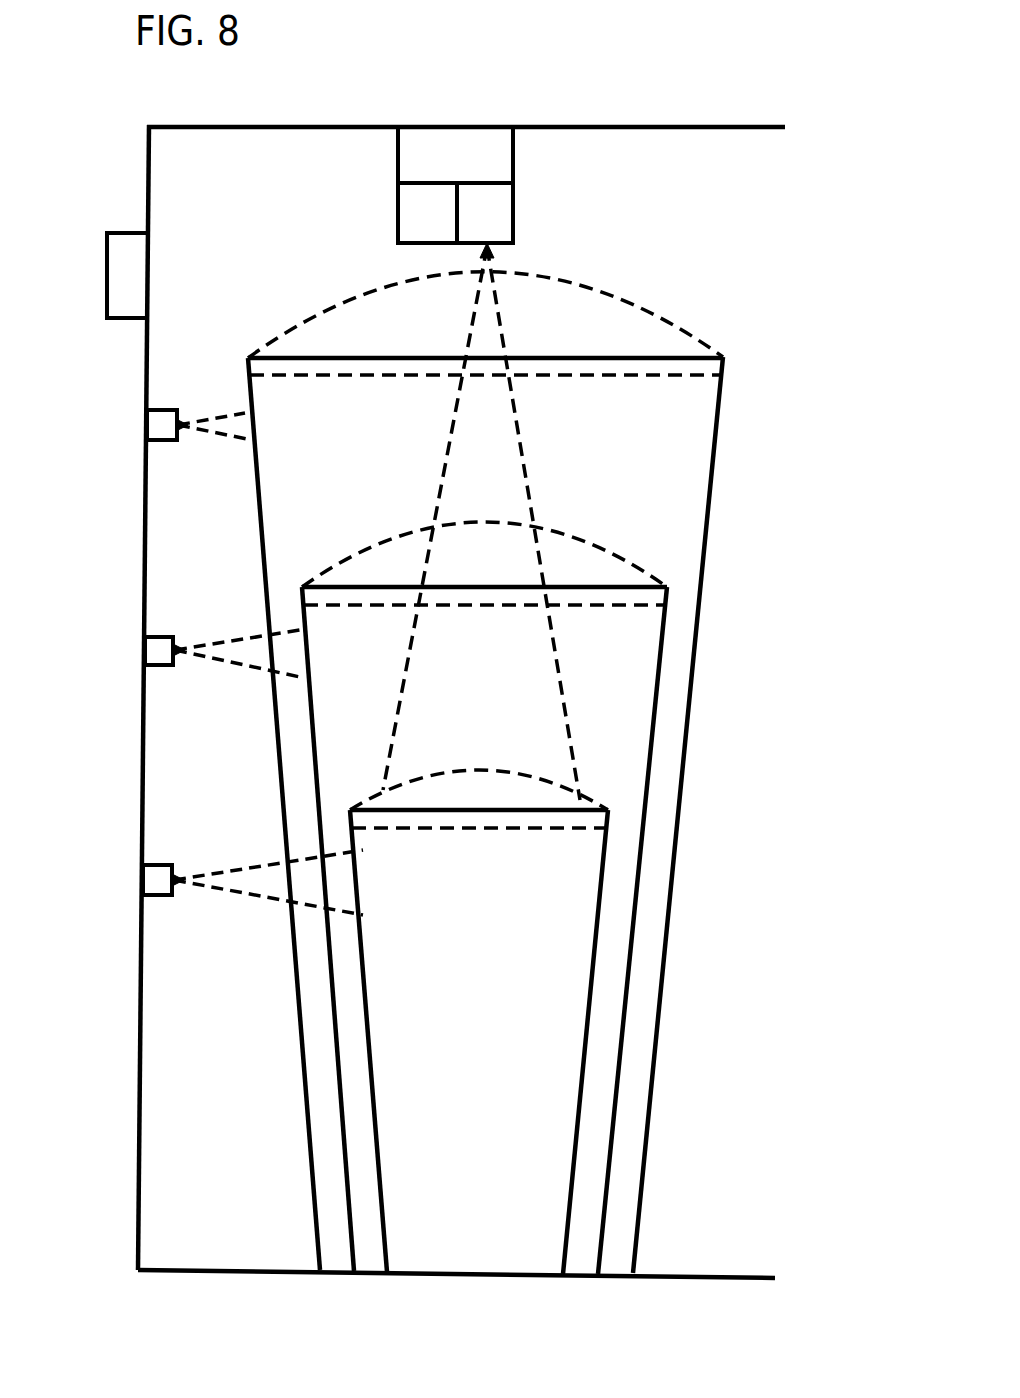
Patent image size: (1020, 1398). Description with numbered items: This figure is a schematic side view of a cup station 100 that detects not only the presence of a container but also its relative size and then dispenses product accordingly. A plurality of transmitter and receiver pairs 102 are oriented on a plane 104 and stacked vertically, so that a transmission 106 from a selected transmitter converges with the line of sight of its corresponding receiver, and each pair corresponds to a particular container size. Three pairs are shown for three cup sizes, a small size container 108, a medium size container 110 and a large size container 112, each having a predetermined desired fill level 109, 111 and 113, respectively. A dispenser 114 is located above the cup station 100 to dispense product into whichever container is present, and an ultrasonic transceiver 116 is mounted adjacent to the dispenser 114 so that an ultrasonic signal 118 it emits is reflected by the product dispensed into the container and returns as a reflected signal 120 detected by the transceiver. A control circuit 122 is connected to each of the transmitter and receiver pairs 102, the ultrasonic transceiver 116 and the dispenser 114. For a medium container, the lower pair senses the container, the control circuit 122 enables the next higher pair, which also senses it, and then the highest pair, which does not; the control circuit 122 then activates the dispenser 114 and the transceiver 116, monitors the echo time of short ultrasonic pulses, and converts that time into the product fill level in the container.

The cup station 100 is at (697, 1071).
The transmitter and receiver pairs 102 is at (145, 667).
The plane 104 is at (143, 990).
The transmission 106 is at (230, 423).
The small size container 108 is at (499, 880).
The predetermined desired fill level 109 is at (428, 828).
The medium size container 110 is at (639, 657).
The predetermined desired fill level 111 is at (400, 603).
The large size container 112 is at (354, 423).
The predetermined desired fill level 113 is at (430, 378).
The dispenser 114 is at (410, 220).
The ultrasonic transceiver 116 is at (492, 222).
The ultrasonic signal 118 is at (500, 323).
The reflected signal 120 is at (627, 302).
The control circuit 122 is at (108, 282).